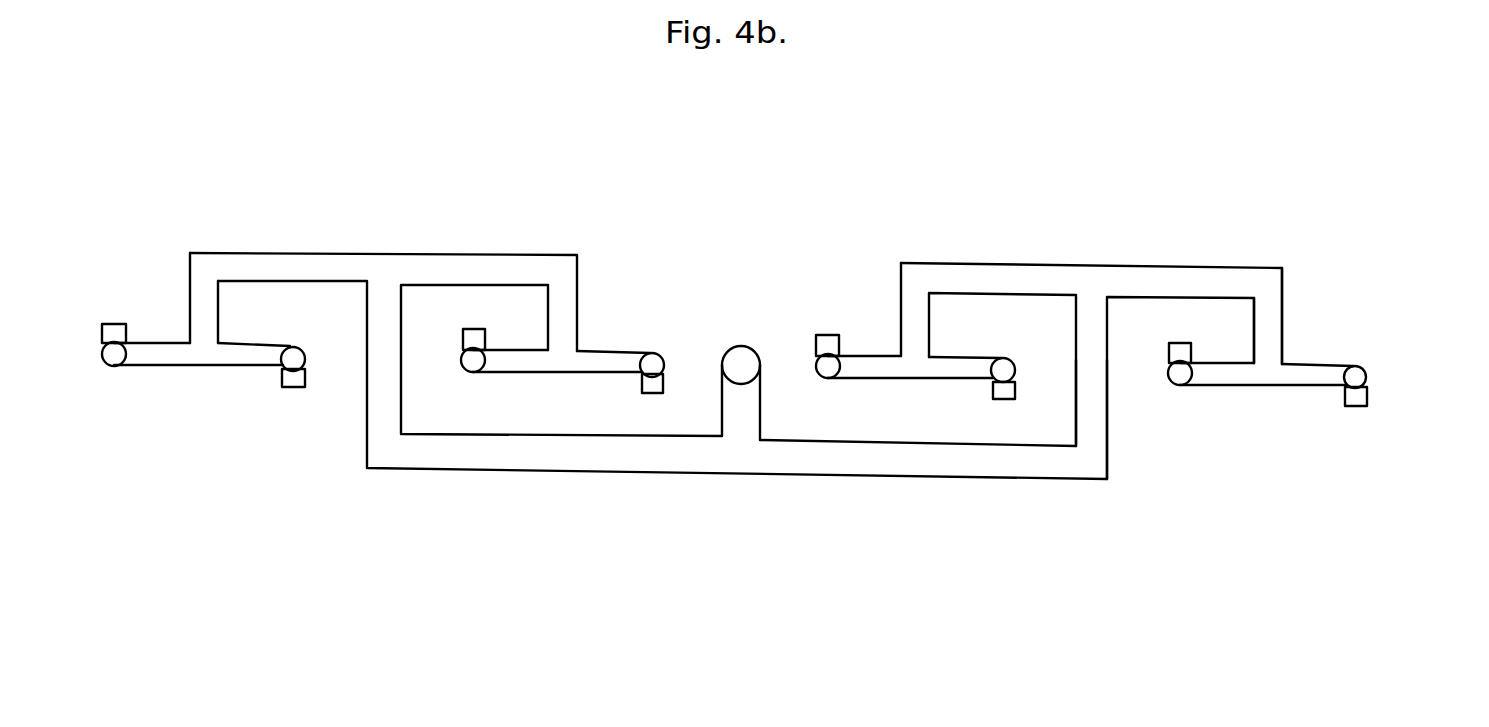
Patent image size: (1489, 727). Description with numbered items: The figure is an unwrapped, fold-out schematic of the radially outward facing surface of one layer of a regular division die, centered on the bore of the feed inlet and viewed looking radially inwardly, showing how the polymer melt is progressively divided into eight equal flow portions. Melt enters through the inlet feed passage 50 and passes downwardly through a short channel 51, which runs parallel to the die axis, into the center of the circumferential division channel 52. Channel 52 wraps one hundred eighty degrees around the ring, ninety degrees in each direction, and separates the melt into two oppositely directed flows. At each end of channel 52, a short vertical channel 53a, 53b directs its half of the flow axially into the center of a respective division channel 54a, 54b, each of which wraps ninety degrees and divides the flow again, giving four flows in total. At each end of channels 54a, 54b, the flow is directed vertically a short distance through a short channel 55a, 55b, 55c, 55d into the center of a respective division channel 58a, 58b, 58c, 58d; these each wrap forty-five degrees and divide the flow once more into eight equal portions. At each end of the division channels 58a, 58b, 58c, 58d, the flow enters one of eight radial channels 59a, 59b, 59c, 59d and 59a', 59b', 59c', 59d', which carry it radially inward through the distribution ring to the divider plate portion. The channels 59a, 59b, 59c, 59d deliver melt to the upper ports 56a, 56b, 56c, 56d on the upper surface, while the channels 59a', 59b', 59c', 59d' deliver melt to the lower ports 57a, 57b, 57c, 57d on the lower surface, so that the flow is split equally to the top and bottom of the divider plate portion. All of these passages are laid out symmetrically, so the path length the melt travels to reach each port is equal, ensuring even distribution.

The inlet feed passage 50 is at (707, 340).
The short channel 51 is at (791, 478).
The division channel 52 is at (918, 442).
The short vertical channel 53a is at (1187, 467).
The short vertical channel 53b is at (736, 418).
The division channel 54a is at (1091, 237).
The division channel 54b is at (383, 225).
The short channel 55a is at (957, 260).
The short channel 55b is at (1324, 270).
The short channel 55c is at (257, 250).
The short channel 55d is at (561, 300).
The upper port 56a is at (879, 239).
The upper port 56b is at (1243, 250).
The upper port 56c is at (172, 231).
The upper port 56d is at (544, 236).
The lower port 57a is at (1063, 492).
The lower port 57b is at (1307, 444).
The lower port 57c is at (236, 446).
The lower port 57d is at (594, 462).
The division channel 58a is at (945, 295).
The division channel 58b is at (1309, 315).
The division channel 58c is at (251, 282).
The division channel 58d is at (598, 292).
The radial channel 59a is at (871, 392).
The radial channel 59a' is at (1073, 447).
The radial channel 59b is at (1224, 400).
The radial channel 59b' is at (1403, 355).
The radial channel 59c is at (159, 381).
The radial channel 59c' is at (212, 409).
The radial channel 59d is at (519, 386).
The radial channel 59d' is at (567, 433).